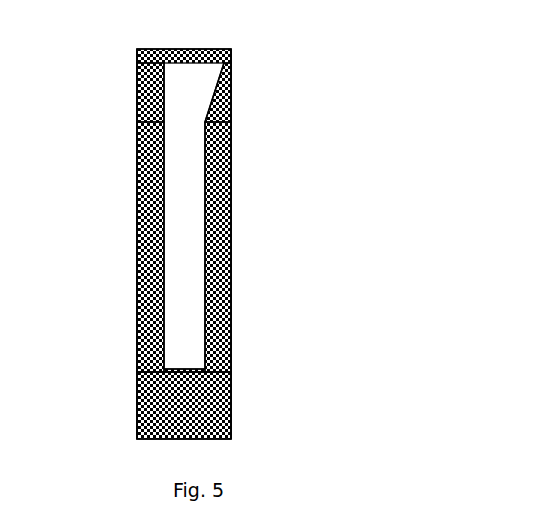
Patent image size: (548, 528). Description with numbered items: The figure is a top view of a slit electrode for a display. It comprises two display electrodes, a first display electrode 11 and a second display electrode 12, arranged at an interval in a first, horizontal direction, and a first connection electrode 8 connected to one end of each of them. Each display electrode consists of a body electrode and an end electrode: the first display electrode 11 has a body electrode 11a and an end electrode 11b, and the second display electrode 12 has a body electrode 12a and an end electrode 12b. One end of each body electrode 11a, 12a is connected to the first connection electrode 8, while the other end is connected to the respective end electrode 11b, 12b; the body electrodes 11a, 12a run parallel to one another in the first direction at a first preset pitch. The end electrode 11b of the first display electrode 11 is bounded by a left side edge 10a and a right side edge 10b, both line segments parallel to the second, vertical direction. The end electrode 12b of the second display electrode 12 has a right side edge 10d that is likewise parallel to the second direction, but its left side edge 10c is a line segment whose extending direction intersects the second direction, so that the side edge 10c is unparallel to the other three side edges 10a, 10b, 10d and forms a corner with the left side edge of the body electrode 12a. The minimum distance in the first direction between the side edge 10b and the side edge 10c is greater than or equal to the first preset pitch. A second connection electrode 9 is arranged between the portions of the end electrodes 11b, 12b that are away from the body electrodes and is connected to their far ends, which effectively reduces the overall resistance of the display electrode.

The first connection electrode 8 is at (231, 408).
The second connection electrode 9 is at (224, 52).
The left side edge of end electrode of first display electrode 10a is at (138, 75).
The right side edge of end electrode of first display electrode 10b is at (161, 92).
The left side edge of end electrode of second display electrode 10c is at (226, 84).
The right side edge of end electrode of second display electrode 10d is at (233, 90).
The first display electrode 11 is at (101, 217).
The body electrode of first display electrode 11a is at (138, 168).
The end electrode of first display electrode 11b is at (146, 105).
The second display electrode 12 is at (272, 217).
The body electrode of second display electrode 12a is at (224, 167).
The end electrode of second display electrode 12b is at (228, 107).